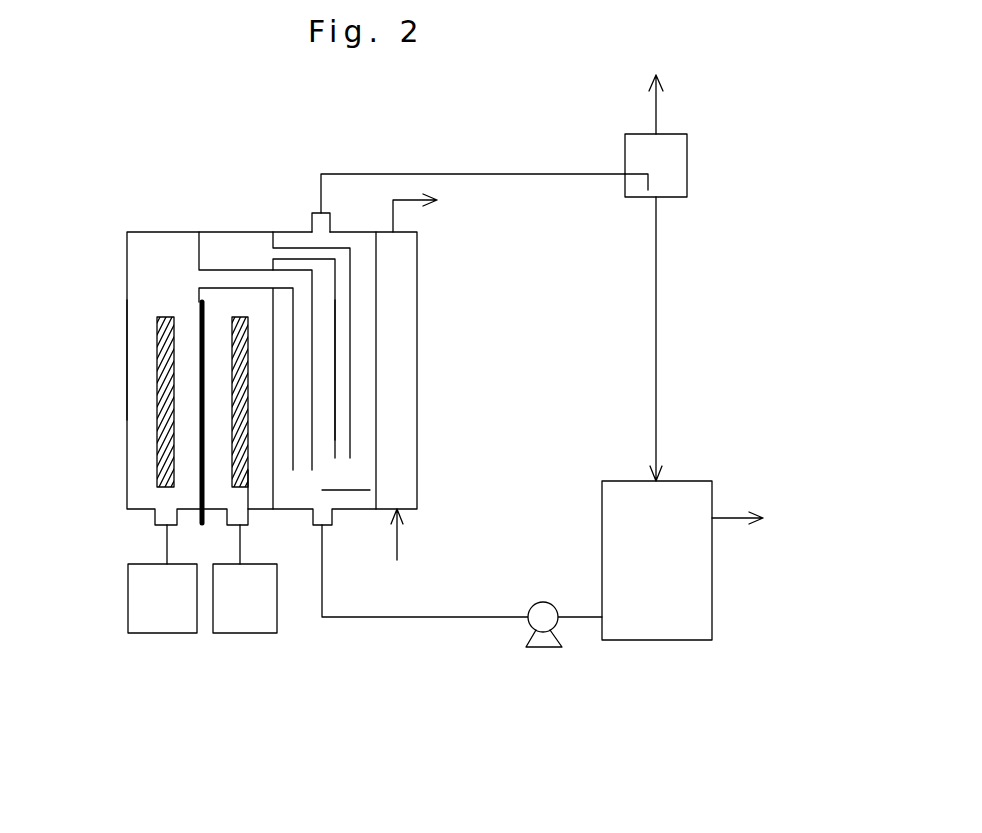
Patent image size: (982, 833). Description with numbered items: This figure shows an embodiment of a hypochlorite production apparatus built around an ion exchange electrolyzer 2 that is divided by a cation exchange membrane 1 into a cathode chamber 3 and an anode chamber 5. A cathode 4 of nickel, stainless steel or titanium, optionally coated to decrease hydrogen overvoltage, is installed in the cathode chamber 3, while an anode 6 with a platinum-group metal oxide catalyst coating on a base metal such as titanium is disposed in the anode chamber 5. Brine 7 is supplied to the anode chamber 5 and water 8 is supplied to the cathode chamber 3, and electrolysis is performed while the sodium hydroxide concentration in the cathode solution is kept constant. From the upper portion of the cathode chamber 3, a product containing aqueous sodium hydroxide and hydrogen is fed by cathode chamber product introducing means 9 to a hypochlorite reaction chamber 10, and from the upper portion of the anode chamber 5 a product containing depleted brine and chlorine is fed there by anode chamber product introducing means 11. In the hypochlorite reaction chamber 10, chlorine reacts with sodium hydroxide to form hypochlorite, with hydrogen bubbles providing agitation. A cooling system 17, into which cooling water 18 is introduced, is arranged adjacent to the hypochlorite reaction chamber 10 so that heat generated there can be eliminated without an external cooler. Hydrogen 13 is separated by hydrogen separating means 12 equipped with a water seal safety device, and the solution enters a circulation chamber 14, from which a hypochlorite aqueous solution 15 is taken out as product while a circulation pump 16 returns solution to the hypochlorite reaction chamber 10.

The cation exchange membrane 1 is at (191, 481).
The ion exchange electrolyzer 2 is at (106, 257).
The cathode chamber 3 is at (140, 330).
The cathode 4 is at (158, 417).
The anode chamber 5 is at (255, 460).
The anode 6 is at (235, 480).
The brine 7 is at (245, 579).
The water 8 is at (162, 579).
The cathode chamber product introducing means 9 is at (253, 282).
The hypochlorite reaction chamber 10 is at (332, 485).
The anode chamber product introducing means 11 is at (345, 302).
The hydrogen separating means 12 is at (642, 157).
The hydrogen 13 is at (667, 112).
The circulation chamber 14 is at (657, 418).
The hypochlorite aqueous solution 15 is at (748, 535).
The circulation pump 16 is at (543, 642).
The cooling system 17 is at (398, 372).
The cooling water 18 is at (396, 552).